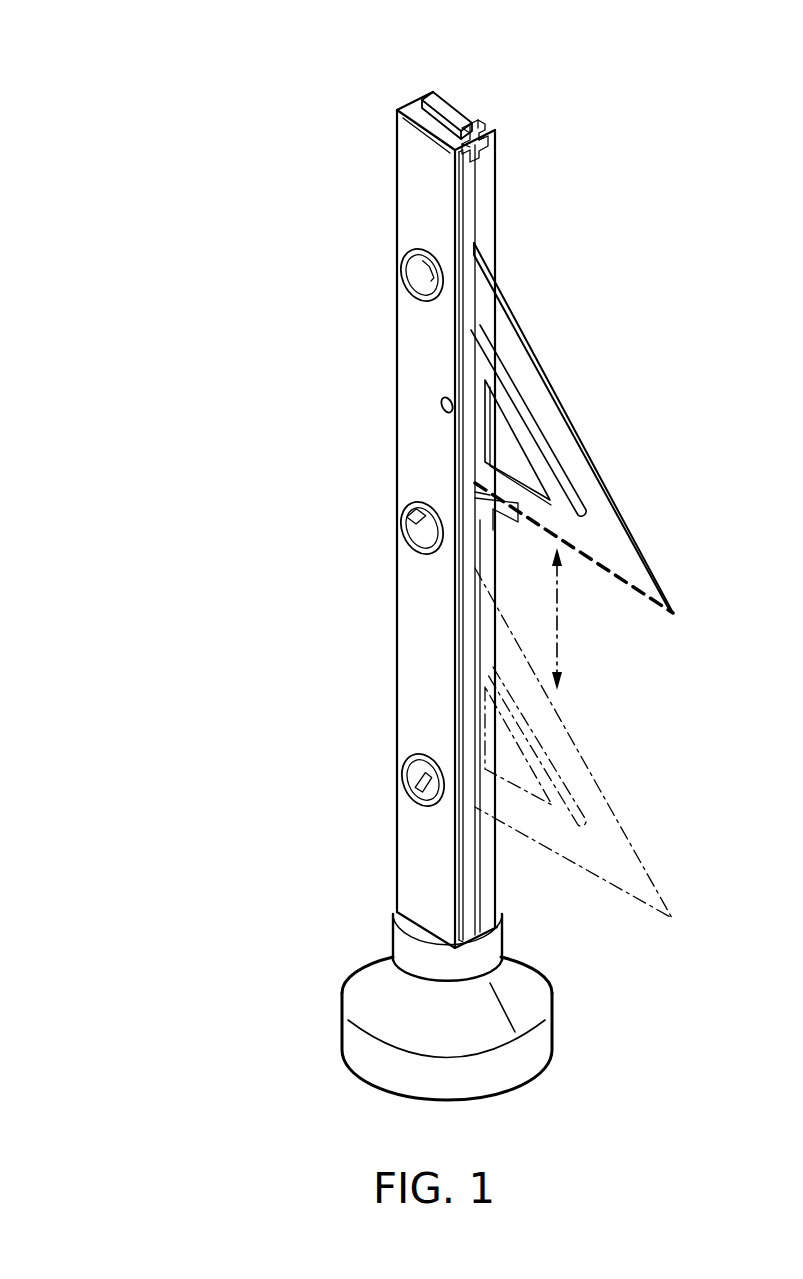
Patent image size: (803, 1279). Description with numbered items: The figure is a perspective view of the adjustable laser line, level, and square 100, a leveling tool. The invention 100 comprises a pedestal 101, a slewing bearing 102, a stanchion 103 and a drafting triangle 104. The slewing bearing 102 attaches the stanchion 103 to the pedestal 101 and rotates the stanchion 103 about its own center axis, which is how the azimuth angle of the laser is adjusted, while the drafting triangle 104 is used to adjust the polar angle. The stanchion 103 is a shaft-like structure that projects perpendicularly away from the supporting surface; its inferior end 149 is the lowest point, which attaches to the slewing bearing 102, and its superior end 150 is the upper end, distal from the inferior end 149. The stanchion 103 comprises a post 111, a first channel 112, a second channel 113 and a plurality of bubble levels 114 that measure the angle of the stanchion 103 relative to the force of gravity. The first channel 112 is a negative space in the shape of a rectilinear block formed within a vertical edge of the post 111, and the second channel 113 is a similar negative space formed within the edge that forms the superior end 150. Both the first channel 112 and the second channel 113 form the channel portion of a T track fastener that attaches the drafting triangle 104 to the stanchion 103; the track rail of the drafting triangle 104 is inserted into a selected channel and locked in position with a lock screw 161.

The adjustable laser line, level, and square 100 is at (170, 138).
The pedestal 101 is at (545, 1032).
The slewing bearing 102 is at (500, 937).
The stanchion 103 is at (397, 720).
The drafting triangle 104 is at (572, 415).
The post 111 is at (420, 642).
The first channel 112 is at (478, 180).
The second channel 113 is at (452, 118).
The bubble levels 114 is at (404, 278).
The inferior end 149 is at (412, 913).
The superior end 150 is at (435, 94).
The lock screw 161 is at (440, 410).